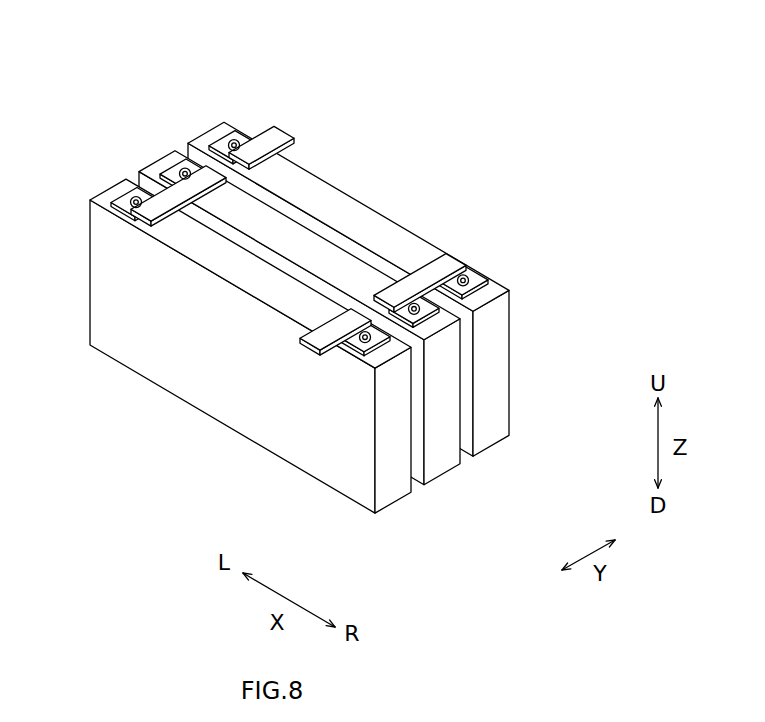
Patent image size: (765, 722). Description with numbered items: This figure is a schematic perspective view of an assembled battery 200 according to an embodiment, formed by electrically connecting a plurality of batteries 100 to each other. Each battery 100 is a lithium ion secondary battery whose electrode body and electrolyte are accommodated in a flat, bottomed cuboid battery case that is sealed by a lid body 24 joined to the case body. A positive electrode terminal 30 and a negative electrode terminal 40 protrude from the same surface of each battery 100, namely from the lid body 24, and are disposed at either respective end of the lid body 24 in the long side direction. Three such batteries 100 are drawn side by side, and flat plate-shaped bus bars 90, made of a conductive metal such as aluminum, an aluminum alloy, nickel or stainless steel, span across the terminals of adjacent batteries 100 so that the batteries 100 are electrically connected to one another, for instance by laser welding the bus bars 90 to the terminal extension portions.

The assembled battery 200 is at (82, 73).
The battery 100 is at (350, 341).
The lid body 24 is at (218, 255).
The positive electrode terminal 30 is at (172, 176).
The negative electrode terminal 40 is at (123, 198).
The bus bar 90 is at (148, 190).